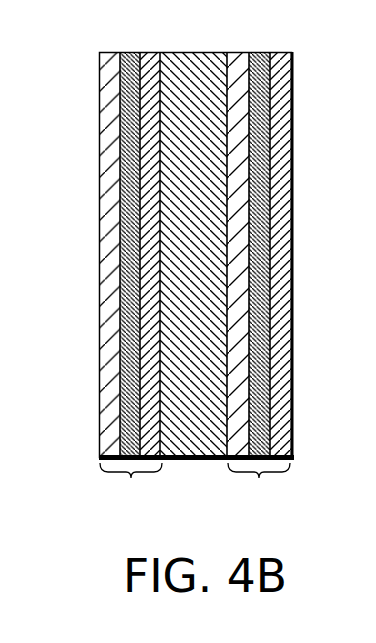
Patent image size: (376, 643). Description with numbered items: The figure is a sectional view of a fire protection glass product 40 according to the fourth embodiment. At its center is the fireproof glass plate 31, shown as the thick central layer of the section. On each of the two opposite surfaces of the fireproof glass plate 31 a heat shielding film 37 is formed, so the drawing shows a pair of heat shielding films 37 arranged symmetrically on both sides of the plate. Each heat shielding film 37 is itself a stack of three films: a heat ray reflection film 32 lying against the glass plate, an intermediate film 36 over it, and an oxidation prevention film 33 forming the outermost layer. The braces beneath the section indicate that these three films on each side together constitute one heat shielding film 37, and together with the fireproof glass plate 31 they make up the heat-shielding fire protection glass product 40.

The fireproof glass plate 31 is at (190, 63).
The heat ray reflection film 32 is at (152, 372).
The oxidation prevention film 33 is at (108, 144).
The intermediate film 36 is at (118, 246).
The heat shielding film 37 is at (195, 484).
The fire protection glass product 40 is at (196, 528).